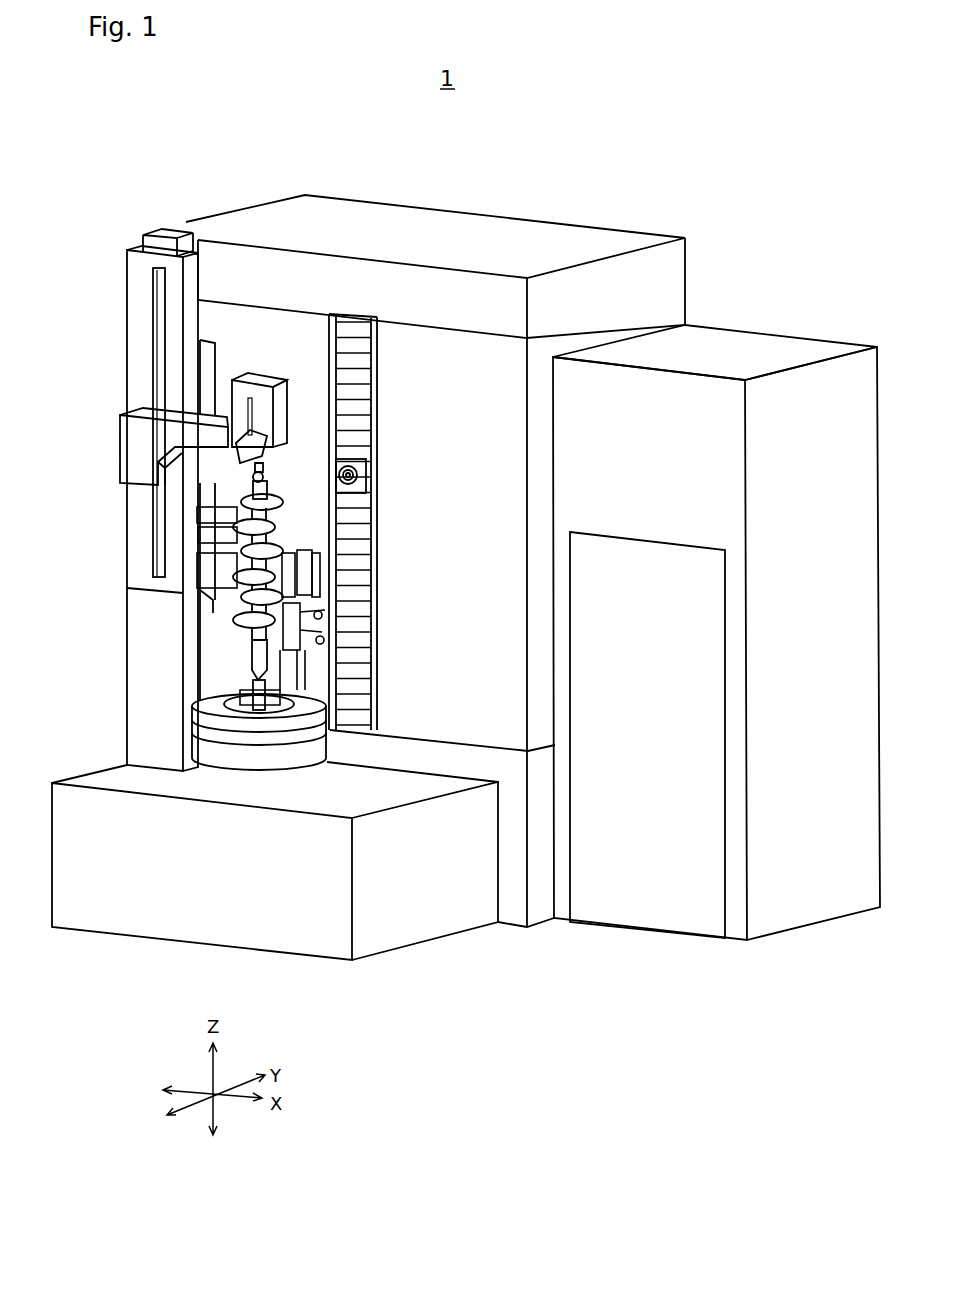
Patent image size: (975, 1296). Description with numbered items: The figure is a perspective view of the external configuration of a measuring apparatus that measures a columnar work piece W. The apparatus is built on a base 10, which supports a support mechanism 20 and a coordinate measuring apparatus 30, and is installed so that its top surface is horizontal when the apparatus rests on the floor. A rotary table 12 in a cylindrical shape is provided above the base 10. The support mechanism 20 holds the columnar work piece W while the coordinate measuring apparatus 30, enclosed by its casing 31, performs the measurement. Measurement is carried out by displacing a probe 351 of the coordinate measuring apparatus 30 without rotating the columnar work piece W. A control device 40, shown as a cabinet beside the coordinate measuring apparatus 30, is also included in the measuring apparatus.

The base 10 is at (274, 938).
The rotary table 12 is at (247, 727).
The support mechanism 20 is at (108, 523).
The coordinate measuring apparatus 30 is at (435, 538).
The casing 31 is at (287, 330).
The probe 351 is at (336, 477).
The control device 40 is at (762, 345).
The columnar work piece W is at (280, 525).